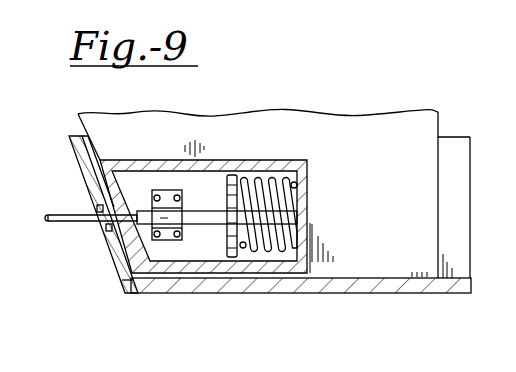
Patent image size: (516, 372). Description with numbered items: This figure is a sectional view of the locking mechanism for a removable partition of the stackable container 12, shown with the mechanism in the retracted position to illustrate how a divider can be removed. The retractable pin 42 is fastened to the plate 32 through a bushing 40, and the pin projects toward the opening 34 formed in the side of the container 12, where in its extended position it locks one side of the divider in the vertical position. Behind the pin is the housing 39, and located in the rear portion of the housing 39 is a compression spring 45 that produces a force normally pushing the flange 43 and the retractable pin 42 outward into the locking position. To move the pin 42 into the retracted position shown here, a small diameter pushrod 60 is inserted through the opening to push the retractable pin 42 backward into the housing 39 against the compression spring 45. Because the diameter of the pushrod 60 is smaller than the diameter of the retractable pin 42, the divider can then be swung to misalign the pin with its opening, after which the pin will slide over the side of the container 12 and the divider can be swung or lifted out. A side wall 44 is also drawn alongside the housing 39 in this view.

The stackable container 12 is at (338, 293).
The plate 32 is at (396, 137).
The opening 34 is at (108, 227).
The housing 39 is at (309, 200).
The bushing 40 is at (172, 240).
The retractable pin 42 is at (125, 290).
The flange 43 is at (233, 173).
The side wall 44 is at (98, 210).
The compression spring 45 is at (258, 178).
The pushrod 60 is at (48, 224).